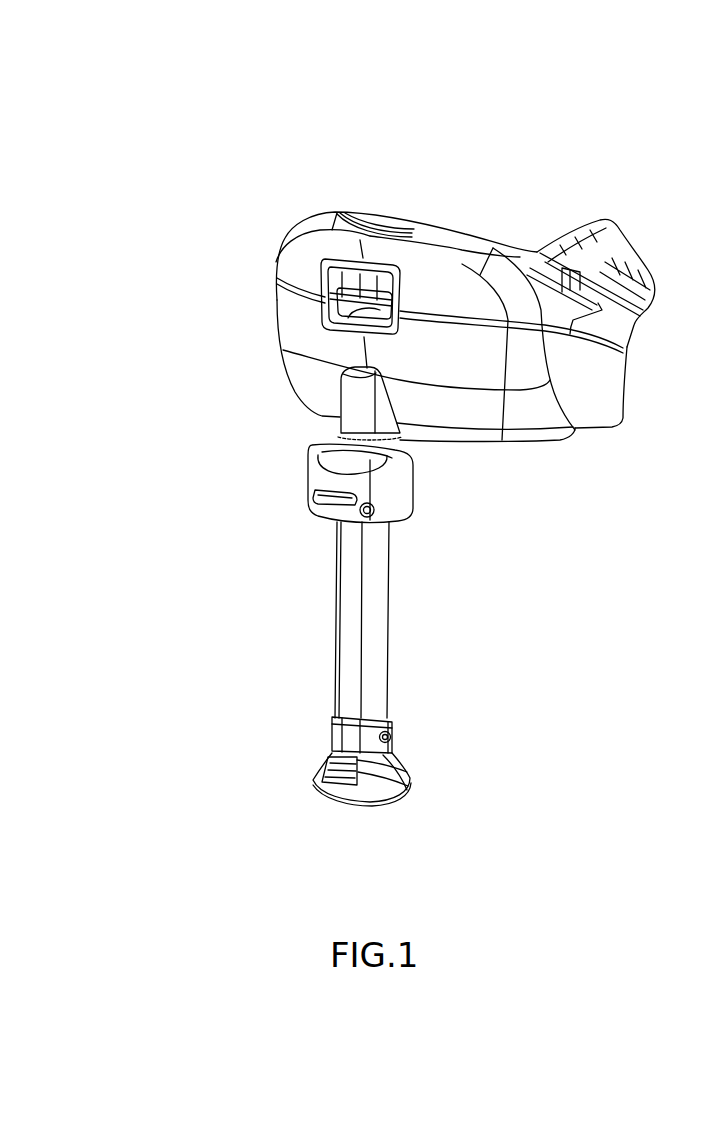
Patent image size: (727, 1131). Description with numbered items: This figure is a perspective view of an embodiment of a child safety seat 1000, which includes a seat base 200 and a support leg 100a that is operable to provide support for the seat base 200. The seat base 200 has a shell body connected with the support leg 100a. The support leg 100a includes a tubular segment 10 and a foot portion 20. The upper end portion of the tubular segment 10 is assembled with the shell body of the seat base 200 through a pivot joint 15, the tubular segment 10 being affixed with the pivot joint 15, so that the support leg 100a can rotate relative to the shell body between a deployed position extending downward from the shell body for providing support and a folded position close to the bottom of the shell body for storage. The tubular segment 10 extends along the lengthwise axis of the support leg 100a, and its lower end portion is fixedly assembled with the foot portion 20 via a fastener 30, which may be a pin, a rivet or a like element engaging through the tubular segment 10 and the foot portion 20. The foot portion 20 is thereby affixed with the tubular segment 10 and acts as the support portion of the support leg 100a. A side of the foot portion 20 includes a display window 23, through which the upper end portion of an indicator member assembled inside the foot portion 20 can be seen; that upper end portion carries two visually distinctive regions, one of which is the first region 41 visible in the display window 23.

The child safety seat 1000 is at (108, 64).
The seat base 200 is at (310, 318).
The pivot joint 15 is at (358, 416).
The support leg 100a is at (190, 543).
The tubular segment 10 is at (356, 597).
The foot portion 20 is at (345, 730).
The fastener 30 is at (393, 733).
The first region 41 is at (325, 765).
The display window 23 is at (315, 780).